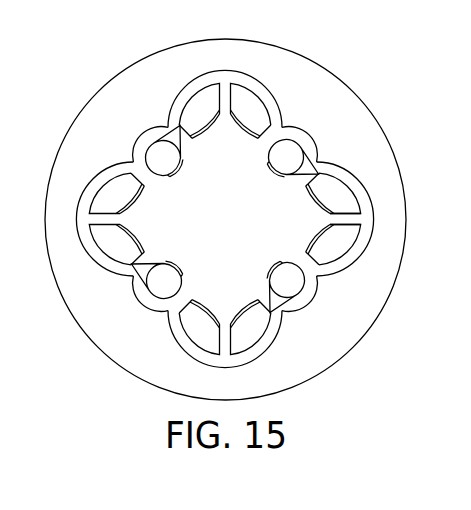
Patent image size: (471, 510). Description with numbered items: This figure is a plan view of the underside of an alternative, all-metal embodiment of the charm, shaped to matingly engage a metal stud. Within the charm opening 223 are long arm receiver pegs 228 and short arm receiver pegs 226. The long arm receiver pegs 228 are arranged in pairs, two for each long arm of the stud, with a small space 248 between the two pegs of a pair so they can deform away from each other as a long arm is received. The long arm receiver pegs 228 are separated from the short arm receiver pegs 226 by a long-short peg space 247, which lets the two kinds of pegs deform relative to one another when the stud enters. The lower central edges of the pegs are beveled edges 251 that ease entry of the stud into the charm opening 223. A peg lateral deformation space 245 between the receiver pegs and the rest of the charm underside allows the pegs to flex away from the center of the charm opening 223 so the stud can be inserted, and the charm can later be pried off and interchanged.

The charm opening 223 is at (272, 198).
The peg lateral deformation space 245 is at (245, 83).
The long arm receiver pegs 228 is at (250, 103).
The short arm receiver pegs 226 is at (295, 158).
The small space 248 is at (352, 219).
The beveled edges 251 is at (328, 207).
The long-short peg space 247 is at (305, 265).